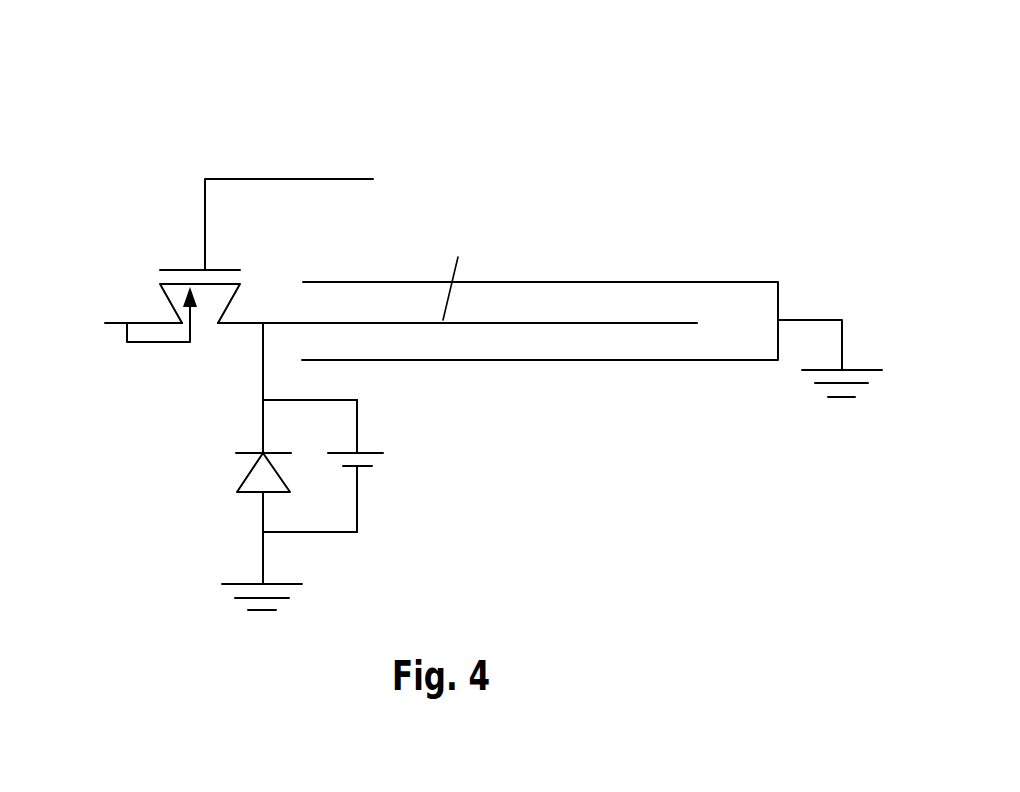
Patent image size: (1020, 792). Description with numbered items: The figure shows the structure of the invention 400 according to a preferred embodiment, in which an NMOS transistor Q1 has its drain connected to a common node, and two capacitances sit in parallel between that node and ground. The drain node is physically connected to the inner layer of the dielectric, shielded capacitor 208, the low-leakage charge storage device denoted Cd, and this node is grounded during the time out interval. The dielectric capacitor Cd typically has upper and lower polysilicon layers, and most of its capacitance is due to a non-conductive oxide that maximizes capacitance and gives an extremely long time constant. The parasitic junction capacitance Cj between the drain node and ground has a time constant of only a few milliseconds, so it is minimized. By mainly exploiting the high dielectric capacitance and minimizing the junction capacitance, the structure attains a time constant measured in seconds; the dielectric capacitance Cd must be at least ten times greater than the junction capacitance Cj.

The structure of the invention 400 is at (160, 103).
The dielectric, shielded capacitor 208 is at (814, 250).
The NMOS transistor Q1 is at (207, 312).
The junction capacitance Cj is at (330, 492).
The dielectric capacitor Cd is at (618, 307).